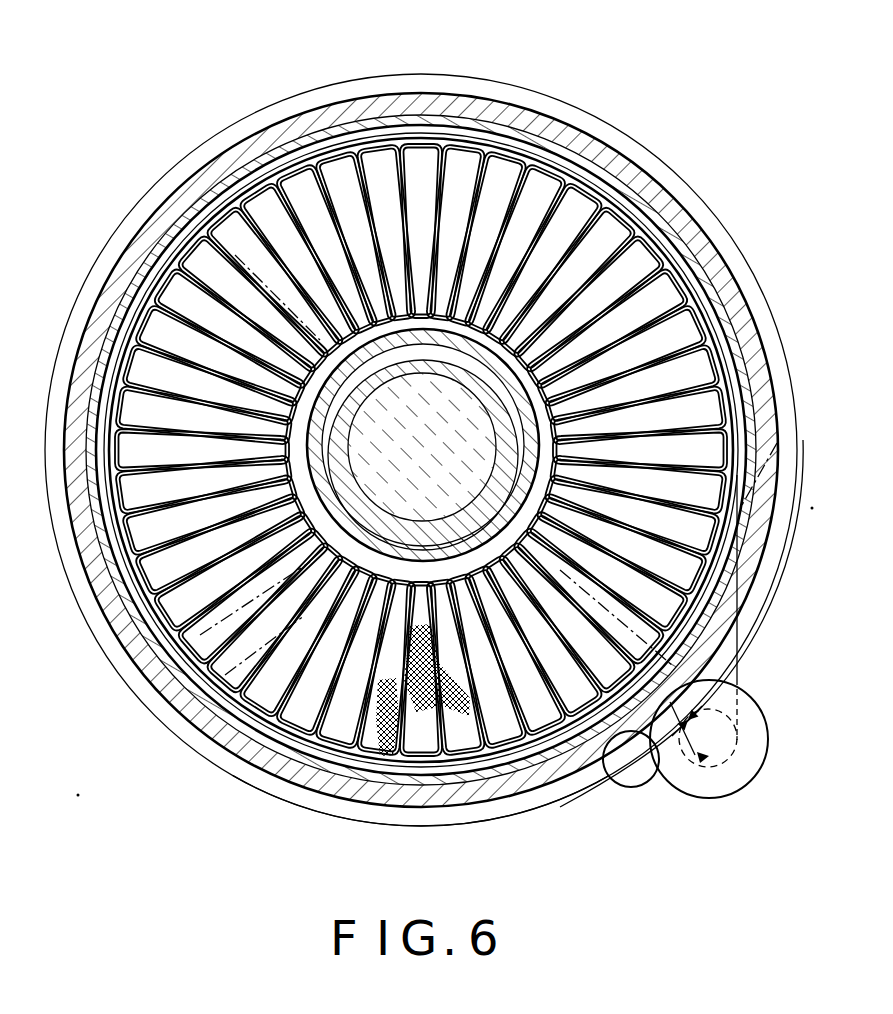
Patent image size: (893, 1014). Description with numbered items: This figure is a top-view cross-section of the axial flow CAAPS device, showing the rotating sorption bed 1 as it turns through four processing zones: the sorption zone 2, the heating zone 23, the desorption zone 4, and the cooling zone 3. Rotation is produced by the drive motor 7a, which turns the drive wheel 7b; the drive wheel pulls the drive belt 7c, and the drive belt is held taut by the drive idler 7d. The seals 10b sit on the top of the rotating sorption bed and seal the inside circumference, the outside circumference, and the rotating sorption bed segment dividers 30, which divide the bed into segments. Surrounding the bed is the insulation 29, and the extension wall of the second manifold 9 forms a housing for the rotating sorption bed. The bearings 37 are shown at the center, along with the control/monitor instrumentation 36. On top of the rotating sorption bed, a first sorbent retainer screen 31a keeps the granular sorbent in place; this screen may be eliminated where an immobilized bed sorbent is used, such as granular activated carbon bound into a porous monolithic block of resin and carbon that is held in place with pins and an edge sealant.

The sorption bed 1 is at (421, 499).
The sorption zone 2 is at (441, 826).
The cooling zone 3 is at (731, 252).
The desorption zone 4 is at (469, 76).
The drive motor 7a is at (714, 798).
The drive wheel 7b is at (684, 758).
The drive belt 7c is at (352, 140).
The drive idler 7d is at (622, 787).
The second manifold 9 is at (262, 150).
The seals 10b is at (337, 713).
The heating zone 23 is at (127, 290).
The insulation 29 is at (700, 189).
The rotating sorption bed segment dividers 30 is at (505, 782).
The first sorbent retainer screen 31a is at (384, 752).
The control/monitor instrumentation 36 is at (432, 356).
The bearings 37 is at (420, 574).